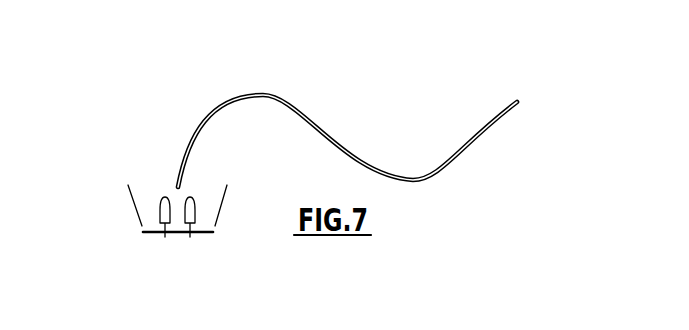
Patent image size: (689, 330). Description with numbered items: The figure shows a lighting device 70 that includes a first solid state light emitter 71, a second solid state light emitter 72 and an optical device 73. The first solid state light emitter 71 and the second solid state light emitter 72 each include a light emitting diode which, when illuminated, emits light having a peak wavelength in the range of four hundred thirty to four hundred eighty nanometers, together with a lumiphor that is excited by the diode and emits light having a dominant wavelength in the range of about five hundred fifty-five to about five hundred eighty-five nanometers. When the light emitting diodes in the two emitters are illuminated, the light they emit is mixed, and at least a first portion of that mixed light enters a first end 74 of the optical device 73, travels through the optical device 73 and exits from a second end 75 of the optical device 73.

The lighting device 70 is at (305, 151).
The first solid state light emitter 71 is at (162, 213).
The second solid state light emitter 72 is at (192, 212).
The optical device 73 is at (372, 158).
The first end 74 is at (177, 165).
The second end 75 is at (507, 103).